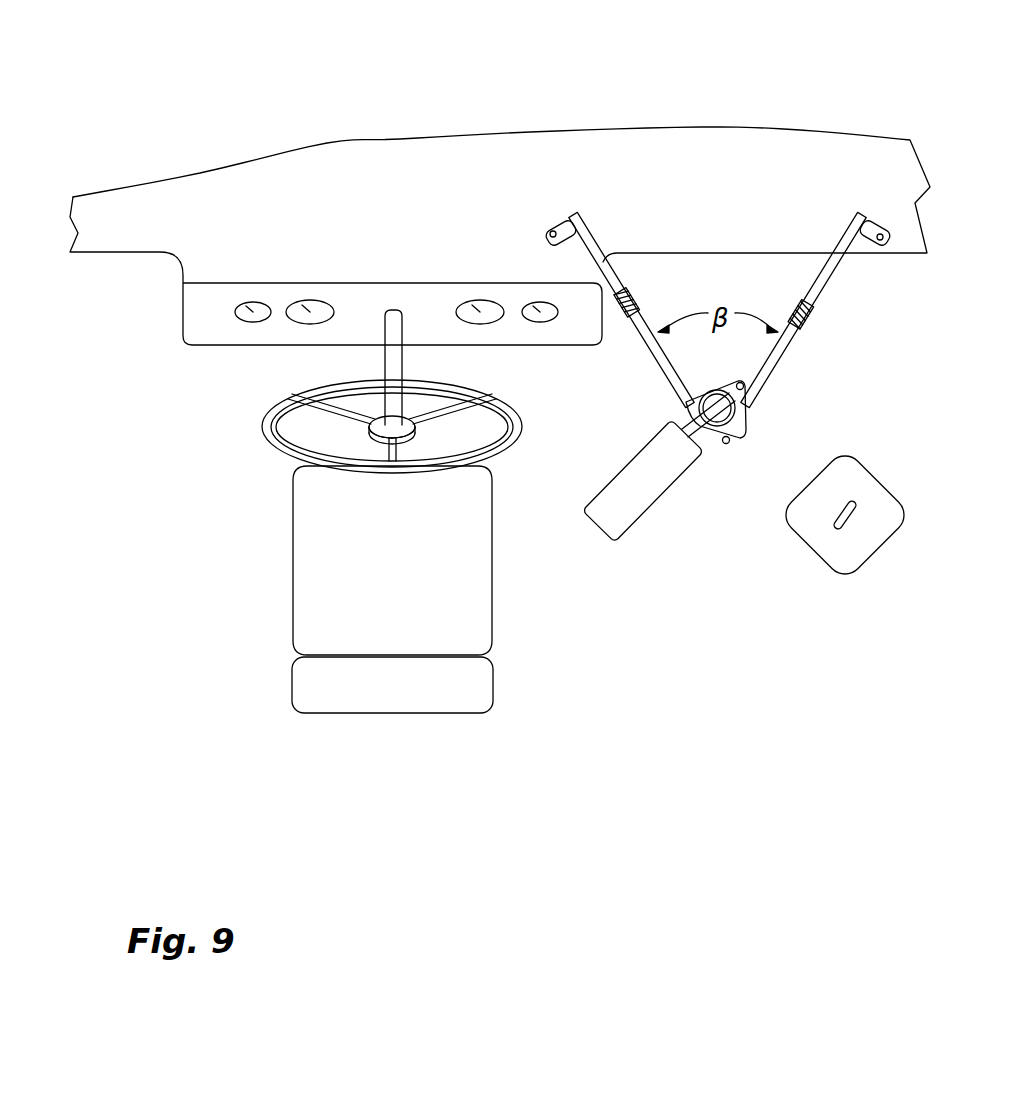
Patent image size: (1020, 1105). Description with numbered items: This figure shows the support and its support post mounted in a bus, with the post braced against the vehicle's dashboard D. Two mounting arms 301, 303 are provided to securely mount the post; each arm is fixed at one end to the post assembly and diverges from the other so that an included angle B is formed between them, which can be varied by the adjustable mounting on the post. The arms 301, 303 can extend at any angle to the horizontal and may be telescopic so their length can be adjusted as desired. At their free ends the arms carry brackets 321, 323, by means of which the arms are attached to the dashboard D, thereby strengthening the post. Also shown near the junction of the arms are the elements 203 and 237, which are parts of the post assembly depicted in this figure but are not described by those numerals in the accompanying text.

The dashboard D is at (333, 142).
The mounting arm 301 is at (602, 243).
The mounting arm 303 is at (788, 364).
The bracket 321 is at (561, 226).
The bracket 323 is at (876, 225).
The hub 203 is at (733, 436).
The controller housing 237 is at (635, 513).